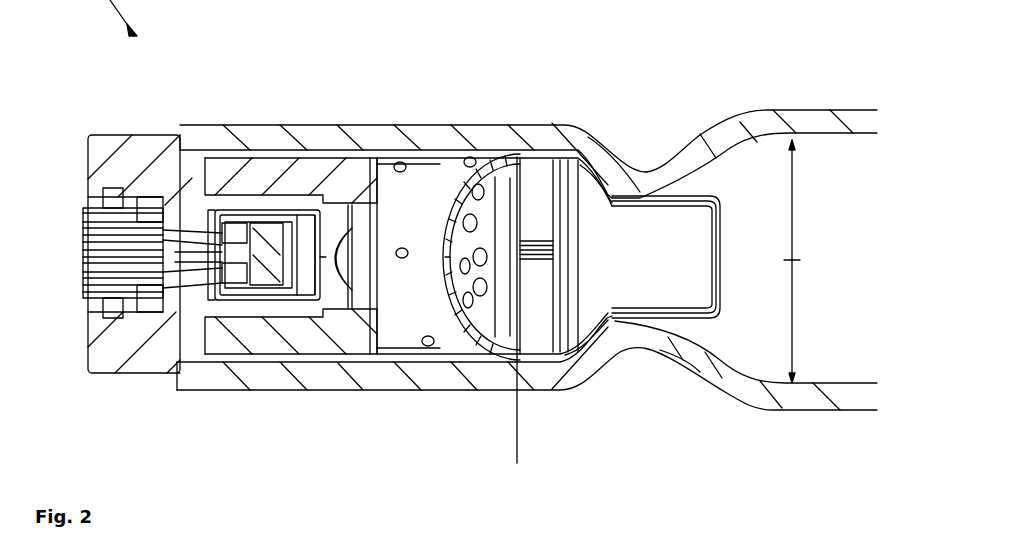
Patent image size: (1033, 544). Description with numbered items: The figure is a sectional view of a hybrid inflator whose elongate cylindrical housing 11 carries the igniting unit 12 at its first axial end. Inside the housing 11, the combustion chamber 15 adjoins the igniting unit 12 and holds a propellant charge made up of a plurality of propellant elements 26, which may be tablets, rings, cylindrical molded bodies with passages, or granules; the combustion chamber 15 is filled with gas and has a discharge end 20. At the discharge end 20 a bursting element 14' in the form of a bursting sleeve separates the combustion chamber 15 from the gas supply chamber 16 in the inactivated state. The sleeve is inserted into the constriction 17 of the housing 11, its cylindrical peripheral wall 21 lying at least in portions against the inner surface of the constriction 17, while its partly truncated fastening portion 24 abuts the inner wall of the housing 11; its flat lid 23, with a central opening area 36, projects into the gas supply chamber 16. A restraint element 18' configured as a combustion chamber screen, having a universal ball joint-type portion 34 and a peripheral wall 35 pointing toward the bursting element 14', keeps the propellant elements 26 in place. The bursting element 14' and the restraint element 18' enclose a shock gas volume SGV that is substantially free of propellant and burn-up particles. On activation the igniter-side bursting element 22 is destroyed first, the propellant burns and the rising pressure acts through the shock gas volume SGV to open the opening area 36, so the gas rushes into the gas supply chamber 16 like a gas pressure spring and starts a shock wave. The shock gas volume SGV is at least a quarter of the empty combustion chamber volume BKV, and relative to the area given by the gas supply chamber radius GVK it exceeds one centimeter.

The housing 11 is at (270, 127).
The igniting unit 12 is at (147, 130).
The bursting element 14' is at (639, 138).
The combustion chamber 15 is at (383, 357).
The gas supply chamber 16 is at (758, 367).
The constriction 17 is at (618, 150).
The restraint element 18' is at (416, 326).
The discharge end 20 is at (670, 323).
The peripheral wall 21 is at (605, 340).
The igniter-side bursting element 22 is at (357, 290).
The lid 23 is at (727, 310).
The fastening portion 24 is at (540, 157).
The propellant elements 26 is at (400, 160).
The universal ball joint-type portion 34 is at (435, 205).
The peripheral wall 35 is at (495, 185).
The opening area 36 is at (720, 250).
The empty volume of the combustion chamber BKV is at (303, 128).
The shock gas volume SGV is at (533, 329).
The radius of the inner diameter of the gas supply chamber GVK is at (792, 195).